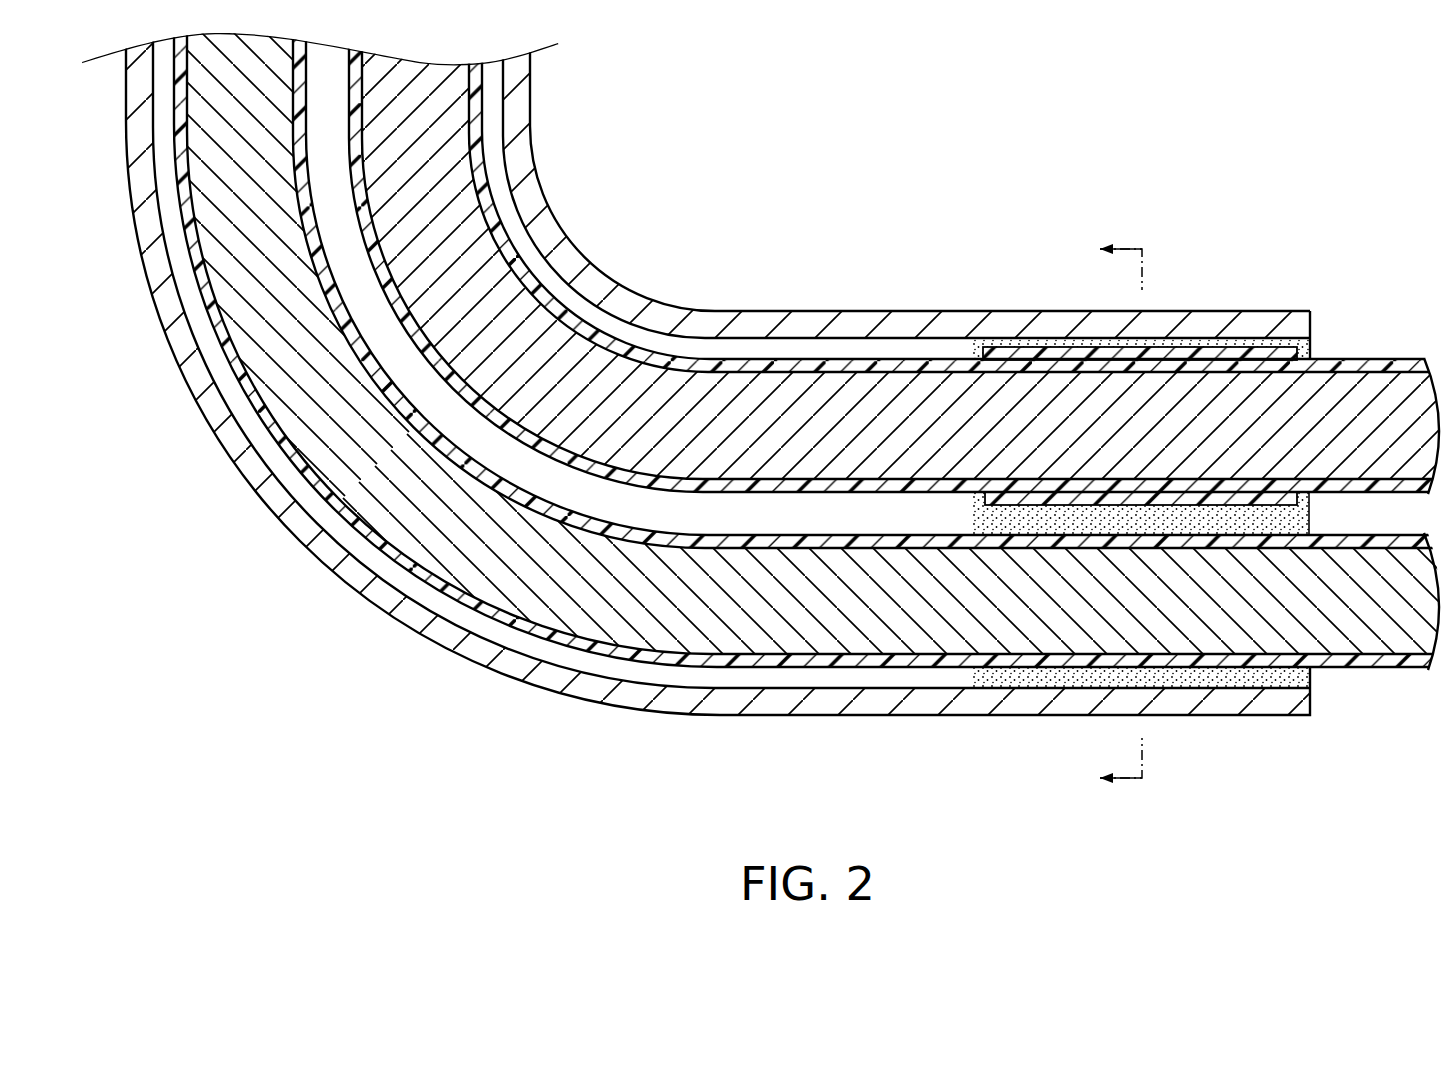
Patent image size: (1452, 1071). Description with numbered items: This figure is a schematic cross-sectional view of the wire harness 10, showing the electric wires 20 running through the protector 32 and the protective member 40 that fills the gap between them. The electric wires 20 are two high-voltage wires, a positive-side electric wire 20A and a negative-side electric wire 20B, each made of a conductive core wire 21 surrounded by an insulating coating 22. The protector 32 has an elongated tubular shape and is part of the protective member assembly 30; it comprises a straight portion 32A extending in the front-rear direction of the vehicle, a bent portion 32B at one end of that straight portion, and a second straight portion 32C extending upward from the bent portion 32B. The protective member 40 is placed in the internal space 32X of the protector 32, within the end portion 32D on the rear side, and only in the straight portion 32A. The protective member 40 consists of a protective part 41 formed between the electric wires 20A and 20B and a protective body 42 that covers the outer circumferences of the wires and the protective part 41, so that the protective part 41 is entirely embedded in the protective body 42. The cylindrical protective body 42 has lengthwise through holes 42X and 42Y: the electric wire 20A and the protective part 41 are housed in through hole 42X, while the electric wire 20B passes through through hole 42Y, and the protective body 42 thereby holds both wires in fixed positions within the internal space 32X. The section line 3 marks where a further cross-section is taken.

The wire harness 10 is at (766, 407).
The electric wires 20 is at (812, 394).
The positive-side electric wire 20A is at (1424, 315).
The negative-side electric wire 20B is at (1424, 713).
The core wire 21 is at (1340, 387).
The insulating coating 22 is at (1403, 362).
The protective member 30 is at (917, 190).
The protector 32 is at (917, 190).
The straight portion 32A is at (962, 323).
The bent portion 32B is at (598, 278).
The straight portion 32C is at (528, 83).
The end portion 32D is at (1305, 311).
The internal space 32X is at (1240, 678).
The protective member 40 is at (1182, 486).
The protective part 41 is at (1260, 267).
The protective body 42 is at (1182, 511).
The through hole 42X is at (1317, 486).
The through hole 42Y is at (1028, 662).
The section line of FIG. 3 is at (1109, 515).